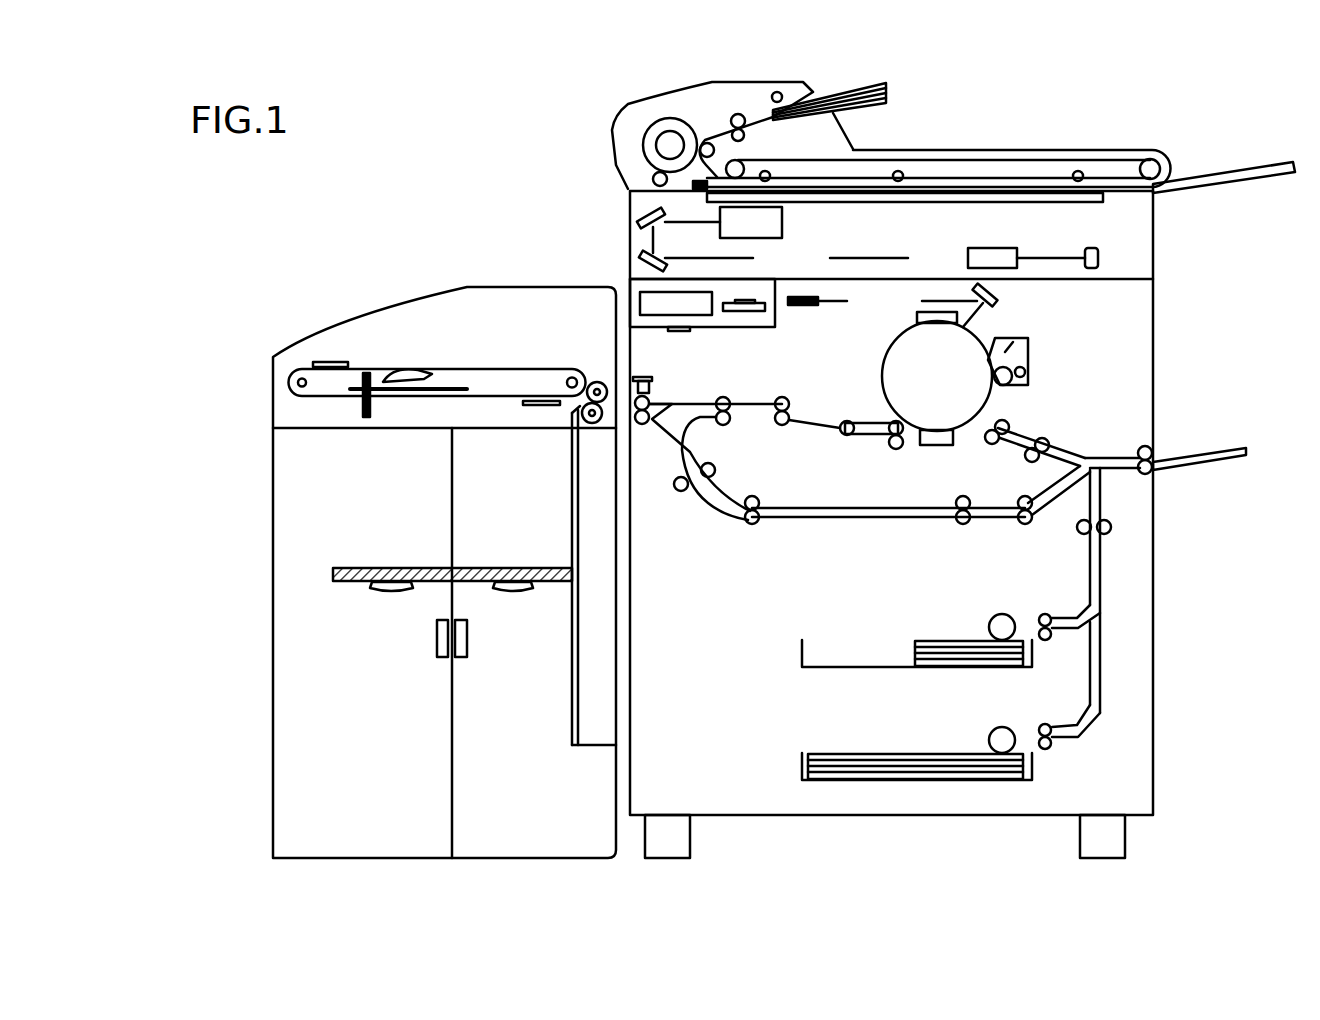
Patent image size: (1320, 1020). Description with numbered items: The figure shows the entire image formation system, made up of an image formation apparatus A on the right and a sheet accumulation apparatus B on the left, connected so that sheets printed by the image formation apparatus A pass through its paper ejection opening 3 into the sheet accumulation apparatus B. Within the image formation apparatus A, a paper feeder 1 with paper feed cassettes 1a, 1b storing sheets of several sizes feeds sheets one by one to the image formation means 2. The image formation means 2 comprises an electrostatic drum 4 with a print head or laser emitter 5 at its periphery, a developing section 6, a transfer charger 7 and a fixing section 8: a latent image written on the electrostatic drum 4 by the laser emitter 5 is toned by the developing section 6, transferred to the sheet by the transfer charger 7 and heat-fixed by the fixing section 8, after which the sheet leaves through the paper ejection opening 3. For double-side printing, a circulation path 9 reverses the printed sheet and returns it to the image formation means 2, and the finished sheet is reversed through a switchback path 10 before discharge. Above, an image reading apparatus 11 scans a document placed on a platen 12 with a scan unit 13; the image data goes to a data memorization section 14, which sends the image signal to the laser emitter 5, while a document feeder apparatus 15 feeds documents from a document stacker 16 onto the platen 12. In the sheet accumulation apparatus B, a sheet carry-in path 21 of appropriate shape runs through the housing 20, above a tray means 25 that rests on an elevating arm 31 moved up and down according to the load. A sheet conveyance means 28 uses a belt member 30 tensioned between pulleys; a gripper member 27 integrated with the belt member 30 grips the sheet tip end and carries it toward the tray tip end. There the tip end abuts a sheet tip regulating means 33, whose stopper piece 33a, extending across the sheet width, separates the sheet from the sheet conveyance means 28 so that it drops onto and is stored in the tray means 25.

The image formation apparatus A is at (983, 122).
The sheet accumulation apparatus B is at (232, 557).
The paper feeder 1 is at (867, 697).
The paper feed cassette 1a is at (795, 645).
The paper feed cassette 1b is at (886, 753).
The image formation means 2 is at (1078, 376).
The paper ejection opening 3 is at (632, 415).
The electrostatic drum 4 is at (893, 360).
The print head (laser emitter) 5 is at (742, 327).
The developing section 6 is at (1027, 350).
The transfer charger 7 is at (932, 445).
The fixing section 8 is at (862, 423).
The circulation path 9 is at (838, 509).
The switchback path 10 is at (700, 456).
The image reading apparatus 11 is at (1154, 246).
The platen 12 is at (1008, 192).
The scan unit 13 is at (768, 220).
The data memorization section 14 is at (987, 257).
The document feeder apparatus 15 is at (712, 82).
The document stacker 16 is at (886, 92).
The housing 20 is at (273, 438).
The sheet carry-in path 21 is at (610, 408).
The tray means 25 is at (452, 585).
The gripper member 27 is at (340, 360).
The sheet conveyance means 28 is at (437, 377).
The belt member 30 is at (457, 368).
The elevating arm 31 is at (517, 585).
The sheet tip regulating means 33 is at (408, 412).
The stopper piece 33a is at (365, 415).